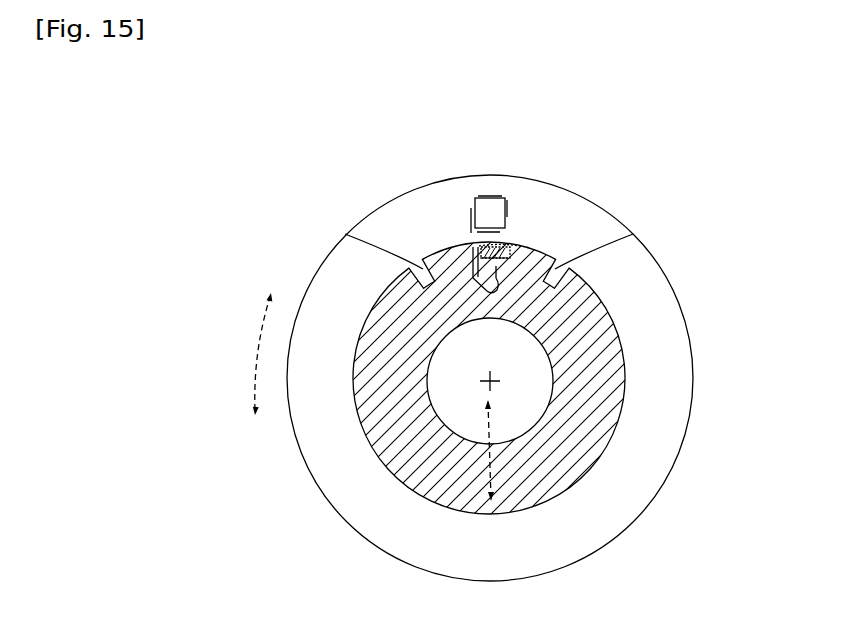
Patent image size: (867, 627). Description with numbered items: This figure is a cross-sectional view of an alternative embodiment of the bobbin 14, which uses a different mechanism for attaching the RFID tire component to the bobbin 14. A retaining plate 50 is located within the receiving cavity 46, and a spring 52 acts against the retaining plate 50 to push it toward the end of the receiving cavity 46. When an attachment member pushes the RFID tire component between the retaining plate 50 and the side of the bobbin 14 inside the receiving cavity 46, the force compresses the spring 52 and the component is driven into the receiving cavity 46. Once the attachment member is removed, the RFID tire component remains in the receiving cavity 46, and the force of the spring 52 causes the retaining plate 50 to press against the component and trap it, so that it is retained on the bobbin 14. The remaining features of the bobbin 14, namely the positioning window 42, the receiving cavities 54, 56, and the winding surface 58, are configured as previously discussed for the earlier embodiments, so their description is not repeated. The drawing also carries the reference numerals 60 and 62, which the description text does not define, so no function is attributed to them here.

The bobbin 14 is at (343, 163).
The positioning window 42 is at (497, 210).
The receiving cavity 46 is at (488, 287).
The retaining plate 50 is at (508, 248).
The spring 52 is at (510, 250).
The receiving cavity 54 is at (345, 234).
The receiving cavity 56 is at (633, 234).
The winding surface 58 is at (528, 510).
The central bore 60 is at (502, 448).
The rotation direction 62 is at (258, 338).